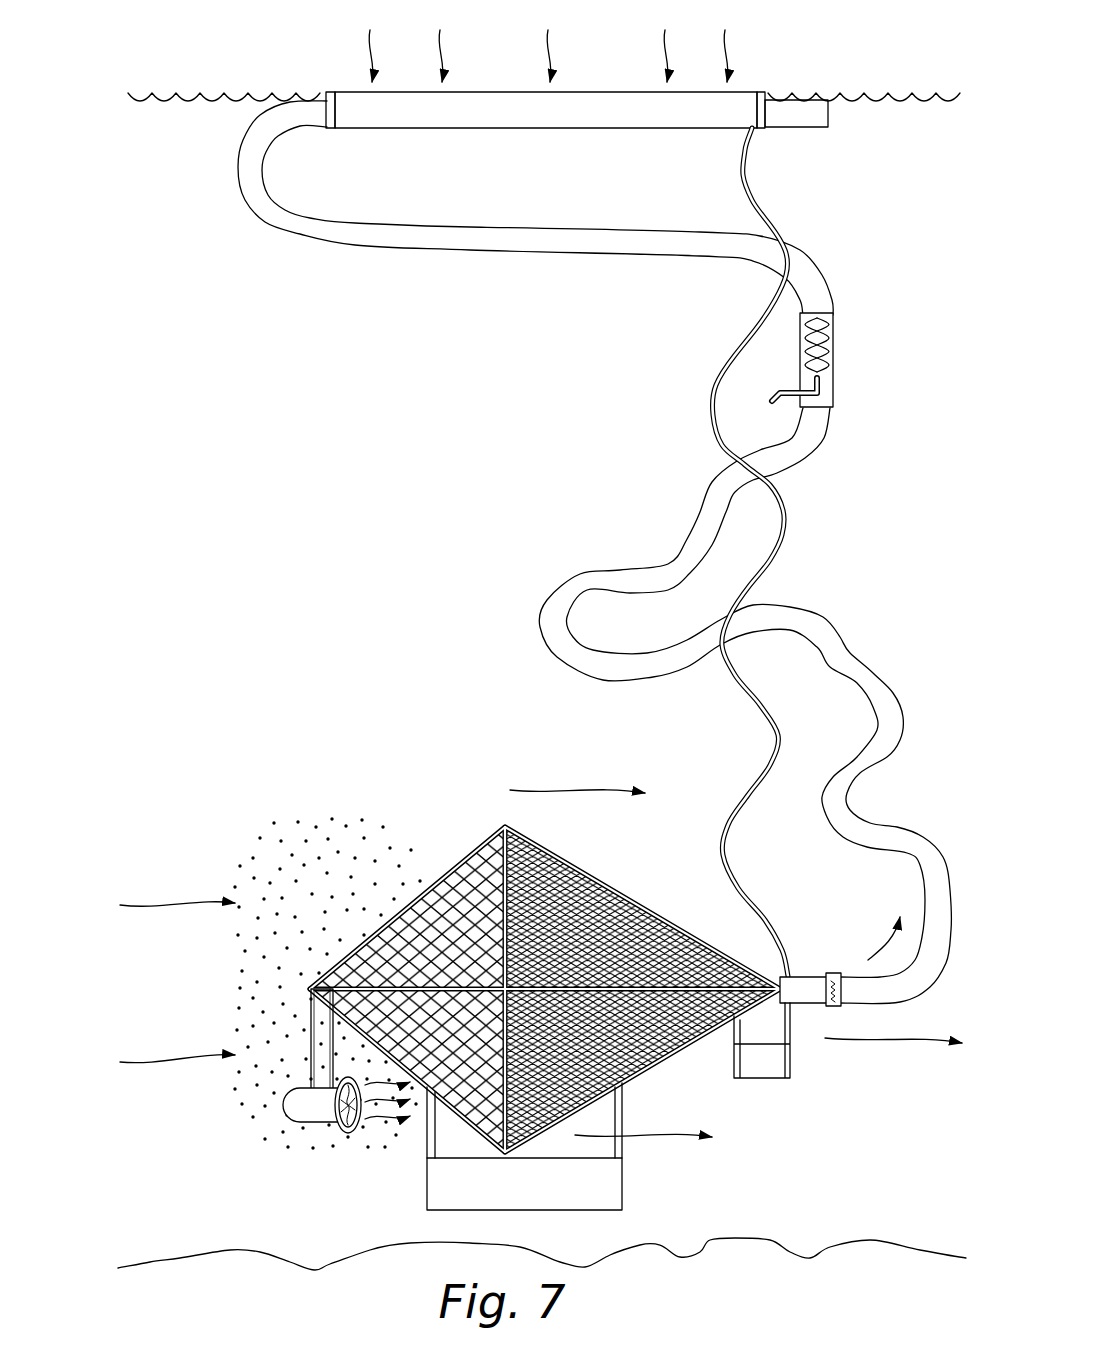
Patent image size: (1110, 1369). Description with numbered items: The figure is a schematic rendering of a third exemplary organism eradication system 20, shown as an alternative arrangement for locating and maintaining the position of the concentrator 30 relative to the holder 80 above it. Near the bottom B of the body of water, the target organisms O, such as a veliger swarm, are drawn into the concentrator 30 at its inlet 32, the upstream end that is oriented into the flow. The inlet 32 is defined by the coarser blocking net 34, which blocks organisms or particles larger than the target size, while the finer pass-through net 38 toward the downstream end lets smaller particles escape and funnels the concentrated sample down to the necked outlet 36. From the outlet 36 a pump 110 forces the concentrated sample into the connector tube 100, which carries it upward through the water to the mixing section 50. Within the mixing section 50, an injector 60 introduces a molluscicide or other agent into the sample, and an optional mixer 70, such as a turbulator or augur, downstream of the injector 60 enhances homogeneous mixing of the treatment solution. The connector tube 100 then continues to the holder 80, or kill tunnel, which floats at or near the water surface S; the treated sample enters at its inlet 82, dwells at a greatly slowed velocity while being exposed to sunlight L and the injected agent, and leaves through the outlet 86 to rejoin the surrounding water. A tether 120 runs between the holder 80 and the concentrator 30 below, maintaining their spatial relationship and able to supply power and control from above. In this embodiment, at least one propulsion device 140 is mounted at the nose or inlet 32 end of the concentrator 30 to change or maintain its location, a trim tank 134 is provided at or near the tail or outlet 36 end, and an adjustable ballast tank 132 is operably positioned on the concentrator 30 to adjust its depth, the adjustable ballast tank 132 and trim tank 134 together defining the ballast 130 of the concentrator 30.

The organism eradication system 20 is at (507, 54).
The concentrator 30 is at (583, 933).
The inlet 32 is at (307, 964).
The blocking net 34 is at (456, 866).
The outlet 36 is at (797, 960).
The pass-through net 38 is at (640, 898).
The mixing section 50 is at (873, 347).
The injector 60 is at (830, 395).
The mixer 70 is at (836, 336).
The holder 80 is at (515, 148).
The inlet 82 is at (212, 124).
The outlet 86 is at (808, 150).
The connector tube 100 is at (556, 246).
The pump 110 is at (835, 974).
The tether 120 is at (790, 521).
The ballast 130 is at (587, 1099).
The adjustable ballast tank 132 is at (624, 1180).
The trim tank 134 is at (773, 1076).
The propulsion device 140 is at (322, 1108).
The water surface S is at (176, 97).
The sunlight L is at (550, 62).
The target organisms O is at (292, 880).
The bottom B is at (178, 1263).